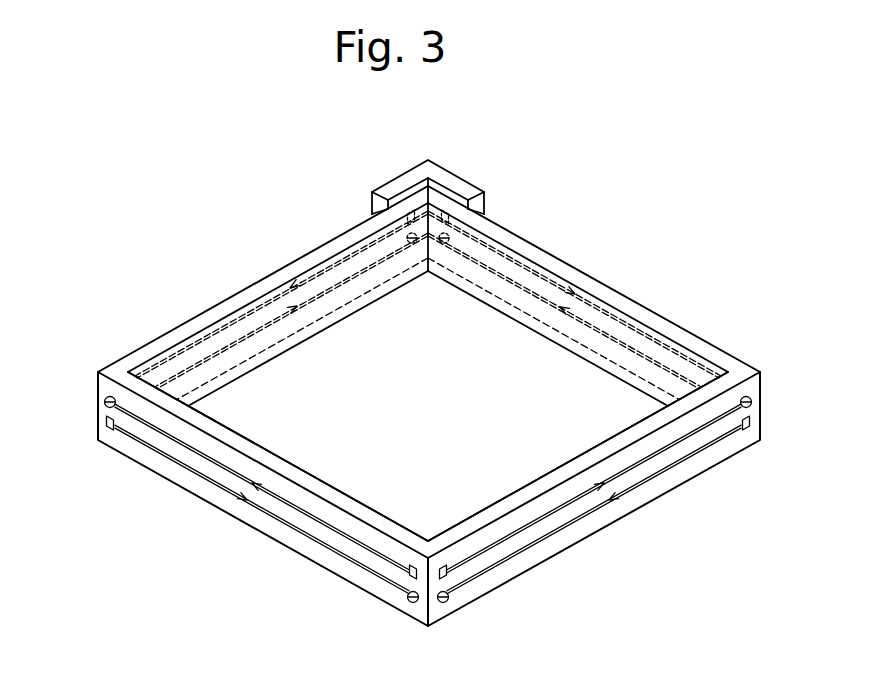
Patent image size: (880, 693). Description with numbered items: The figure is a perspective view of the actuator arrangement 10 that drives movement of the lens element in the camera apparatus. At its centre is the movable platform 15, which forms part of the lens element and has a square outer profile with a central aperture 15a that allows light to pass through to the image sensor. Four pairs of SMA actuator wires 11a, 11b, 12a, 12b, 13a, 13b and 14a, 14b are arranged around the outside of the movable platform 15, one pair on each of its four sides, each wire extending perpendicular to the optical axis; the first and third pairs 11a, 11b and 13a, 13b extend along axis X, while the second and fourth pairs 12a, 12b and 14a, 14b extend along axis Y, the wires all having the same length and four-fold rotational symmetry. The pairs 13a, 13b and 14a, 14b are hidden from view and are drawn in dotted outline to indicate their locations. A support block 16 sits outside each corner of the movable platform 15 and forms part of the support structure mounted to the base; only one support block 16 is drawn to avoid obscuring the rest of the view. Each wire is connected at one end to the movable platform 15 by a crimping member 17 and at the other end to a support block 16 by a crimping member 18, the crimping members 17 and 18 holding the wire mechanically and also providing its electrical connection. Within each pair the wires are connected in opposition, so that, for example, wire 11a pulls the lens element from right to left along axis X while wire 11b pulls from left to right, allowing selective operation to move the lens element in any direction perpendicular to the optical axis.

The actuator arrangement 10 is at (545, 362).
The SMA actuator wire 11a is at (263, 516).
The SMA actuator wire 11b is at (213, 463).
The SMA actuator wire 12a is at (637, 489).
The SMA actuator wire 12b is at (553, 512).
The SMA actuator wire 13a is at (547, 297).
The SMA actuator wire 13b is at (508, 255).
The SMA actuator wire 14a is at (232, 340).
The SMA actuator wire 14b is at (308, 272).
The movable platform 15 is at (613, 400).
The central aperture 15a is at (648, 412).
The support block 16 is at (386, 185).
The crimping member 17 is at (106, 400).
The crimping member 18 is at (106, 423).